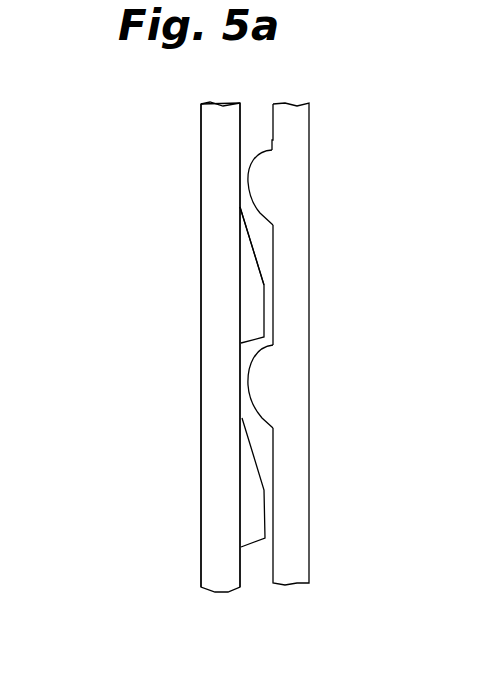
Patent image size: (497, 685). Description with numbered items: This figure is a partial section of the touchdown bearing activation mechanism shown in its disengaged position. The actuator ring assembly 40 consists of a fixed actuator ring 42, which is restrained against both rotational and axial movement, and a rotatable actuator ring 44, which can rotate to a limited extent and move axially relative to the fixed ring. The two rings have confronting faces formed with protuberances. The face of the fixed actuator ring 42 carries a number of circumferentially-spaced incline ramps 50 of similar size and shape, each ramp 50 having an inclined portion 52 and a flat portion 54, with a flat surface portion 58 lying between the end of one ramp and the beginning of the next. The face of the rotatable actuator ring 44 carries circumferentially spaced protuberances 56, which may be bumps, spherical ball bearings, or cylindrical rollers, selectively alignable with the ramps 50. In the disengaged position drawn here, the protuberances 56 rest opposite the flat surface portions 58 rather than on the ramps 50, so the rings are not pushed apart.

The actuator ring assembly 40 is at (128, 186).
The fixed actuator ring 42 is at (212, 125).
The rotatable actuator ring 44 is at (297, 118).
The incline ramp 50 is at (250, 297).
The inclined portion 52 is at (255, 252).
The flat portion 54 is at (262, 305).
The protuberances 56 is at (262, 181).
The flat surface portion 58 is at (240, 377).